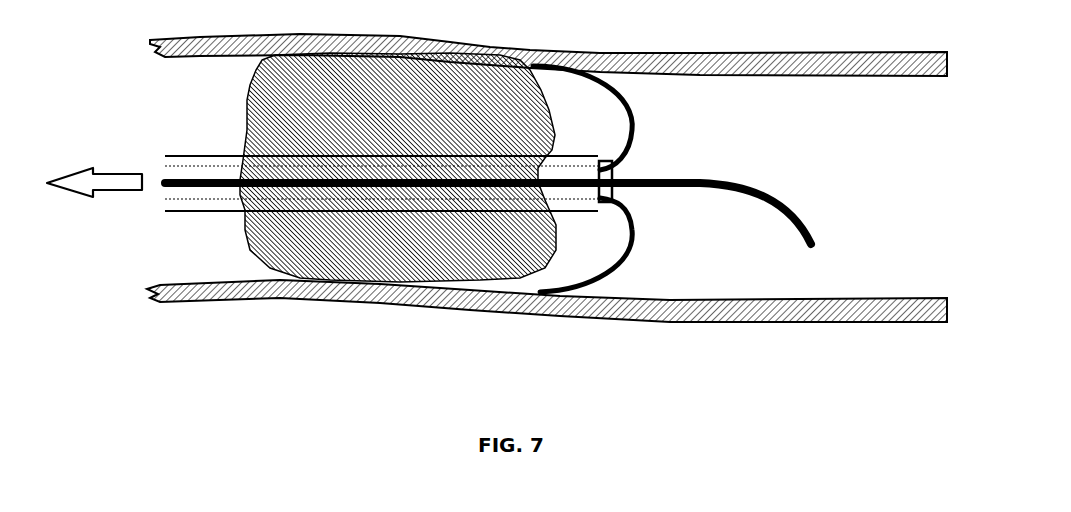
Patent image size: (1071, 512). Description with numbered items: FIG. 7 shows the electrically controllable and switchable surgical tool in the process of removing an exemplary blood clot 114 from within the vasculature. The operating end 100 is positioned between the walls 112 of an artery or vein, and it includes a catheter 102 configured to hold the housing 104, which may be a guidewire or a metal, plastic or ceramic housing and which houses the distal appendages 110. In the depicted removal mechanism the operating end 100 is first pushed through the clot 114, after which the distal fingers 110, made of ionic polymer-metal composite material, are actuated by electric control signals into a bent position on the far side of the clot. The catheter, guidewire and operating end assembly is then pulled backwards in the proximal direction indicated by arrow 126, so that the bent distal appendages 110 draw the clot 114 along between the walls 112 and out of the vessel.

The operating end 100 is at (753, 183).
The catheter 102 is at (583, 157).
The housing 104 is at (232, 200).
The distal appendages 110 is at (614, 168).
The walls 112 is at (610, 310).
The blood clot 114 is at (350, 262).
The arrow 126 is at (120, 200).